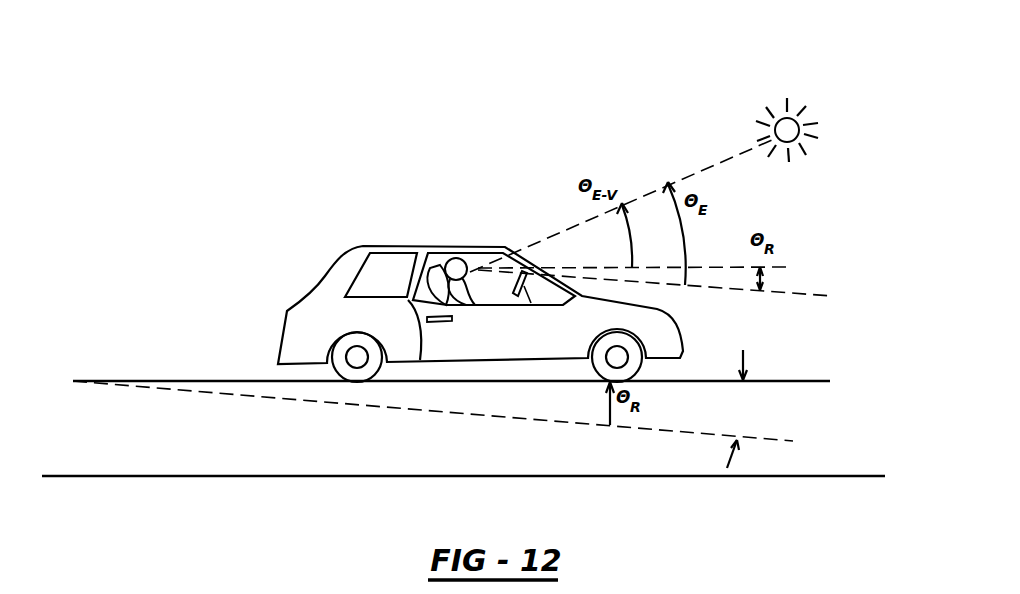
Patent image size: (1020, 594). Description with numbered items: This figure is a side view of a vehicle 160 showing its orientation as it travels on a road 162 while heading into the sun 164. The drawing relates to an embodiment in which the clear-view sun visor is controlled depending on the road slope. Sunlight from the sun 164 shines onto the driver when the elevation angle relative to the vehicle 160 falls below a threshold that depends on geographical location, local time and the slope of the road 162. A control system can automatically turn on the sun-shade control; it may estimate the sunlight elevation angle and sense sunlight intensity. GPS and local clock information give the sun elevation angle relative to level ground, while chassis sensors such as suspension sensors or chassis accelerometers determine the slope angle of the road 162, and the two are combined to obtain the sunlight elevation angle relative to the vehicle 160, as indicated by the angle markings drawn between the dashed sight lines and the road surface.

The vehicle 160 is at (460, 247).
The road 162 is at (237, 381).
The sun 164 is at (800, 120).